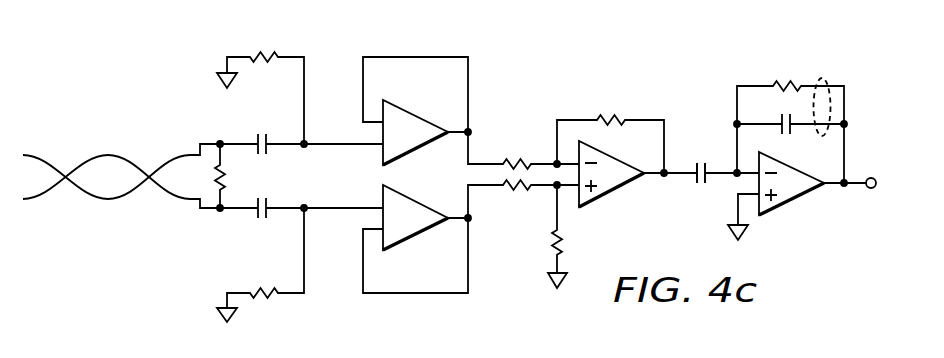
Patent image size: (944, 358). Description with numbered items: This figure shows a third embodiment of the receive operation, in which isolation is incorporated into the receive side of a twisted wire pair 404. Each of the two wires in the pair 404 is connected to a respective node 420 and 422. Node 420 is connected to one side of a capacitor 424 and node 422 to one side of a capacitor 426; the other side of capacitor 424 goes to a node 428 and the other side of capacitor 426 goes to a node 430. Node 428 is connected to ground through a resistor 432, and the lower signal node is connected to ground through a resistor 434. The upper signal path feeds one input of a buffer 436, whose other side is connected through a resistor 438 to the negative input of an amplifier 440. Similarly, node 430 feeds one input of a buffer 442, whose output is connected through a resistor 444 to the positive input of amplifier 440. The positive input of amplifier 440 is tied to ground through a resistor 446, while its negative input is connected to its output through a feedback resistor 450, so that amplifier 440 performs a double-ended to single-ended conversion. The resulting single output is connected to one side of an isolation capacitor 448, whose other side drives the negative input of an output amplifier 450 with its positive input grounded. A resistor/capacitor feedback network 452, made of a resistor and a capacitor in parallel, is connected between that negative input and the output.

The twisted wire pair 404 is at (108, 152).
The node 420 is at (218, 141).
The node 422 is at (216, 213).
The capacitor 424 is at (262, 133).
The capacitor 426 is at (262, 220).
The node 428 is at (307, 141).
The node 430 is at (309, 212).
The resistor 432 is at (265, 52).
The resistor 434 is at (263, 298).
The buffer 436 is at (437, 95).
The resistor 438 is at (516, 158).
The amplifier 440 is at (612, 194).
The buffer 442 is at (418, 236).
The resistor 444 is at (515, 193).
The resistor 446 is at (553, 248).
The isolation capacitor 448 is at (697, 186).
The resistor / amplifier 450 is at (612, 116).
The resistor/capacitor feedback network 452 is at (822, 75).